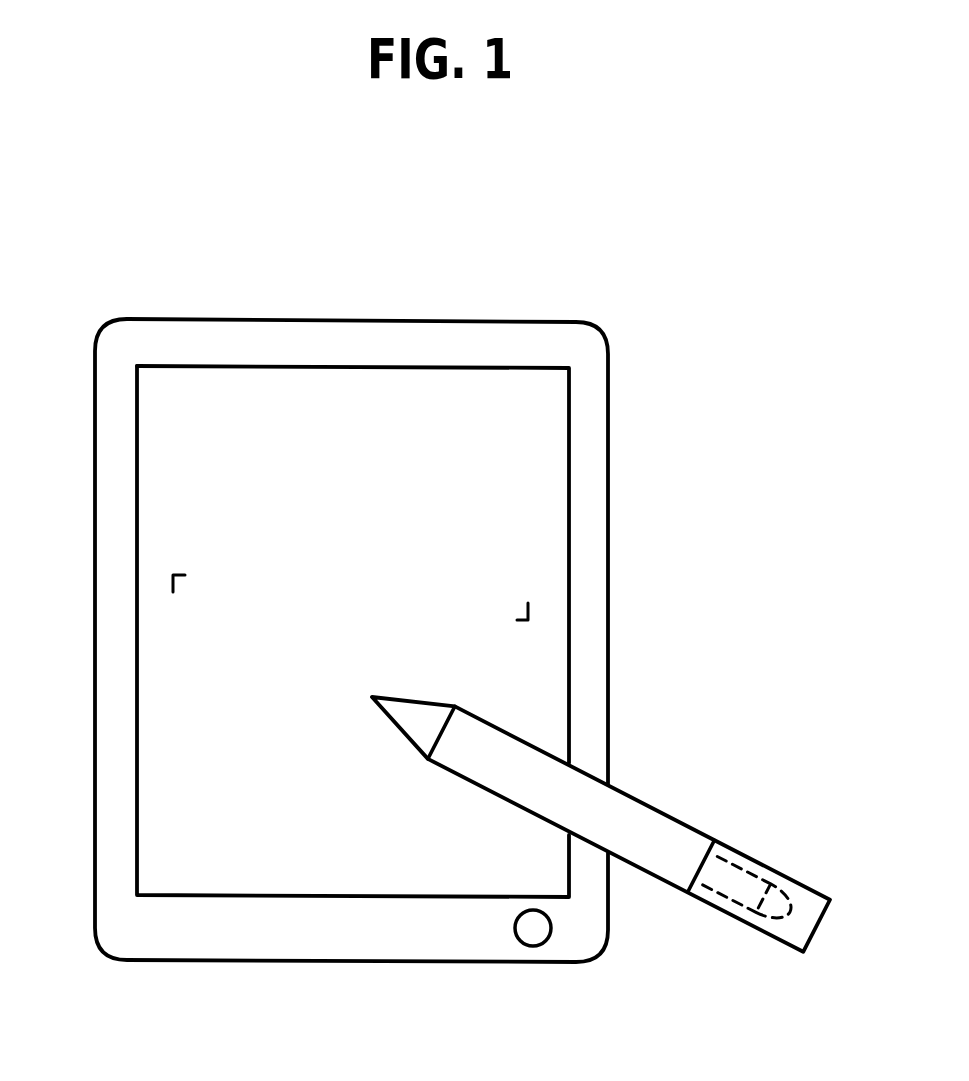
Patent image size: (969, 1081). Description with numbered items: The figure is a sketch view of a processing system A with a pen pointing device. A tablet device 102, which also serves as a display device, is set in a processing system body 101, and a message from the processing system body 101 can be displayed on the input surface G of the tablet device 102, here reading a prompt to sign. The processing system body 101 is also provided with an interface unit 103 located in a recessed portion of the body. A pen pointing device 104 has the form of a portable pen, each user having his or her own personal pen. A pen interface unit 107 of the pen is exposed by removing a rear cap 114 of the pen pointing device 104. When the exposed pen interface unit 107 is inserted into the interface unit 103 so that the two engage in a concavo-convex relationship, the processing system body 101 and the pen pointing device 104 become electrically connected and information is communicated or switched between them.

The processing system with pen pointing device A is at (282, 285).
The processing system body 101 is at (480, 320).
The tablet device 102 is at (193, 362).
The interface unit 103 is at (528, 934).
The pen pointing device 104 is at (665, 832).
The pen interface unit 107 is at (717, 910).
The rear cap 114 is at (797, 883).
The input surface G is at (157, 585).